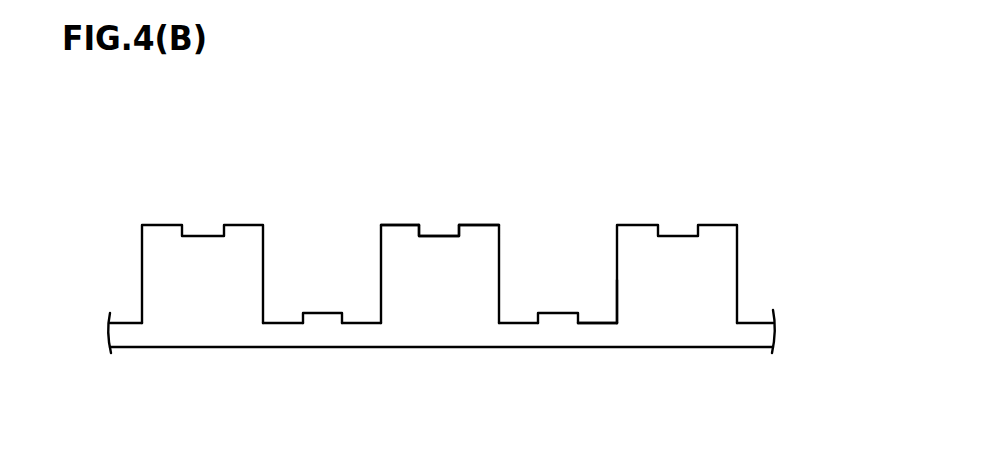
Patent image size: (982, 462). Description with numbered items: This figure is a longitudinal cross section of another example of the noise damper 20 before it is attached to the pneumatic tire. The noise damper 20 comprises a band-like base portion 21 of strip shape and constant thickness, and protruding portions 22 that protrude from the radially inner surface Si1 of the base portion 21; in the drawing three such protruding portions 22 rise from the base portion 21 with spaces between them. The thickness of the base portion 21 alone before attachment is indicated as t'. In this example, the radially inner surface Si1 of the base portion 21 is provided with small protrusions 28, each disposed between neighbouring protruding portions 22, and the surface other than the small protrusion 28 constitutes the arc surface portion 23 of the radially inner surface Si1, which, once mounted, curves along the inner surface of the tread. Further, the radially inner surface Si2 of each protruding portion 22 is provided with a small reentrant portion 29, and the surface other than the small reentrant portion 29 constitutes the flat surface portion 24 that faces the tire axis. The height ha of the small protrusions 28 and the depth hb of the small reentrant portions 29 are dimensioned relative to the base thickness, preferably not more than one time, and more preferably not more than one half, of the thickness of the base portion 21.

The noise damper 20 is at (723, 192).
The base portion 21 is at (557, 333).
The protruding portions 22 is at (443, 298).
The arc surface portion 23 is at (585, 323).
The flat surface portion 24 is at (400, 225).
The small protrusions 28 is at (560, 312).
The small reentrant portion 29 is at (441, 225).
The radially inner surface of the base portion Si1 is at (600, 323).
The radially inner surface of the protruding portion Si2 is at (478, 225).
The height of the small protrusions ha is at (293, 280).
The depth of the small reentrant portions hb is at (117, 193).
The thickness of the base portion before attachment t' is at (347, 351).